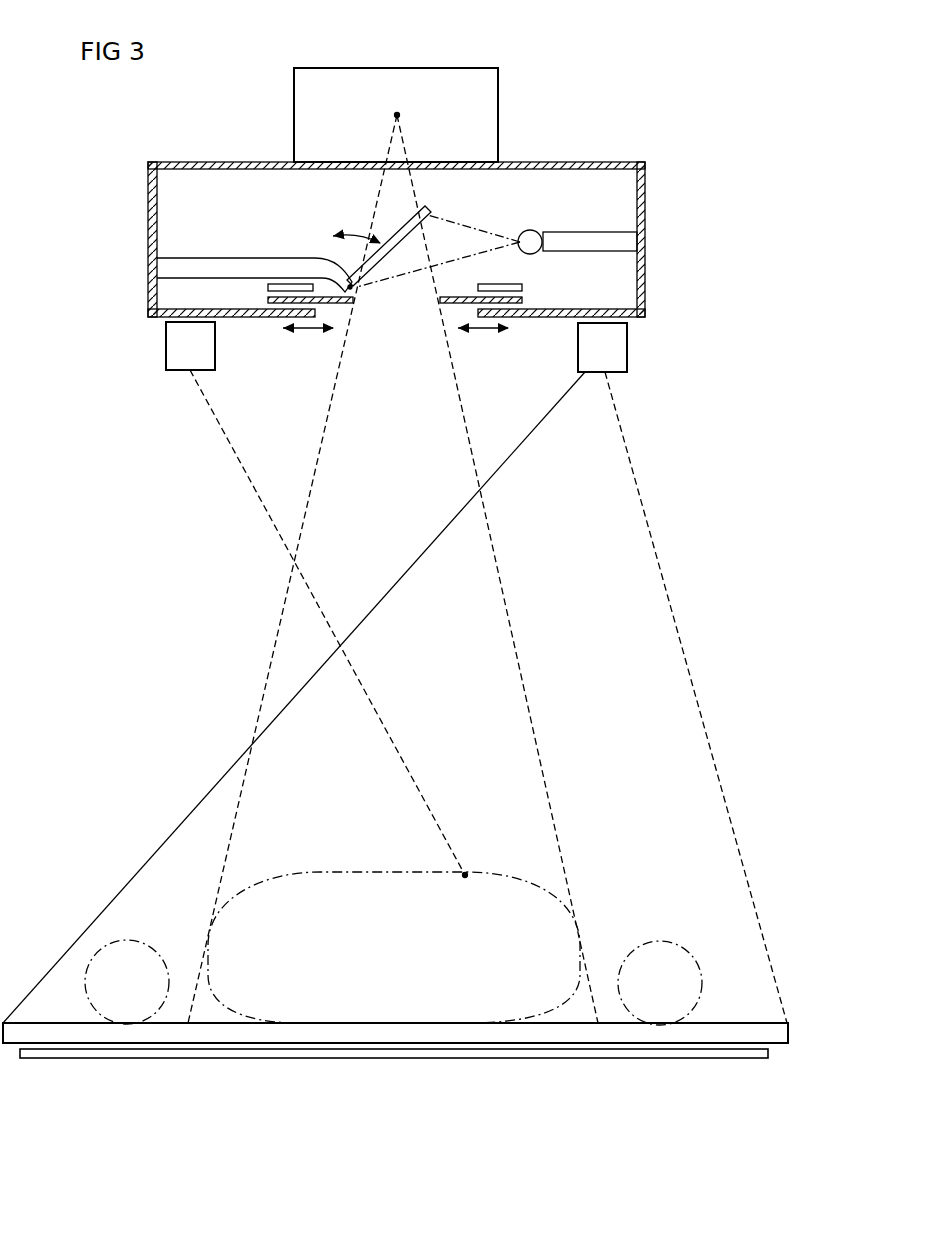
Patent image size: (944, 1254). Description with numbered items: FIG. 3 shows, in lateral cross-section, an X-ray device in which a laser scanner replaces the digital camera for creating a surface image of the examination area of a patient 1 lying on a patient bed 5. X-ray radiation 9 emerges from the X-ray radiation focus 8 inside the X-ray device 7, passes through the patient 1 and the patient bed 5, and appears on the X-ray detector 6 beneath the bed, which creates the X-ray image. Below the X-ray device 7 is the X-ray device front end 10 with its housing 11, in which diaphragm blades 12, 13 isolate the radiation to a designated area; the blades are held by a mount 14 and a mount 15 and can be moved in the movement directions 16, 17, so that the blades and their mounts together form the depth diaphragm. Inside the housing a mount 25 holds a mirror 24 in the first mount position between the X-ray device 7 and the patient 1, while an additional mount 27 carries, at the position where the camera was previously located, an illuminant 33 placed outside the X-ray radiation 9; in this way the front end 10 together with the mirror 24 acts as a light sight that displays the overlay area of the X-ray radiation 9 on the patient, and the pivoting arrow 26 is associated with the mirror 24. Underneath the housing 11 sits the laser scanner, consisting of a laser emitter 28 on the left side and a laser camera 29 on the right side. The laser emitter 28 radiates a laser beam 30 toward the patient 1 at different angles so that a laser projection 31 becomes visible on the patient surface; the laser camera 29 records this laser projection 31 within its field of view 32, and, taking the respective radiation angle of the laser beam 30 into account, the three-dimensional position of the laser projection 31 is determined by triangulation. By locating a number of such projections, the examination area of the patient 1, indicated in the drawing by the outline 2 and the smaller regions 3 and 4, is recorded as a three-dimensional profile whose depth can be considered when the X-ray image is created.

The patient 1 is at (375, 812).
The large structure 2 is at (318, 875).
The small structure 3 is at (127, 955).
The small structure 4 is at (660, 955).
The patient bed 5 is at (728, 1035).
The X-ray detector 6 is at (640, 1060).
The X-ray device 7 is at (513, 112).
The X-ray radiation focus 8 is at (397, 115).
The X-ray radiation 9 is at (388, 148).
The X-ray device front end 10 is at (668, 208).
The housing 11 is at (645, 297).
The diaphragm blade 12 is at (347, 303).
The diaphragm blade 13 is at (455, 303).
The mount 14 is at (268, 287).
The mount 15 is at (522, 292).
The movement direction 16 is at (305, 333).
The movement direction 17 is at (488, 333).
The mirror 24 is at (398, 241).
The mount 25 is at (190, 262).
The pivoting direction of mirror 26 is at (368, 238).
The additional mount 27 is at (600, 243).
The laser emitter 28 is at (168, 345).
The laser camera 29 is at (620, 350).
The laser beam 30 is at (257, 471).
The laser projection 31 is at (465, 875).
The field of view 32 is at (629, 482).
The illuminant 33 is at (530, 232).